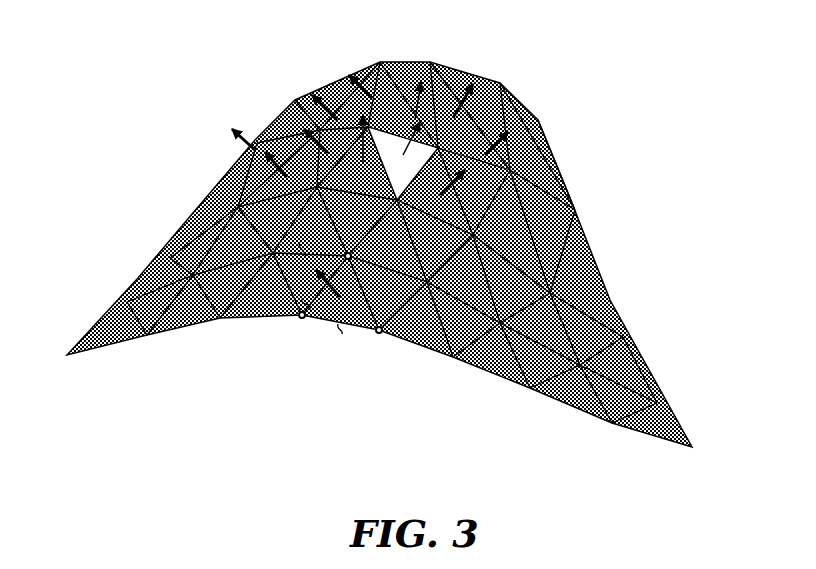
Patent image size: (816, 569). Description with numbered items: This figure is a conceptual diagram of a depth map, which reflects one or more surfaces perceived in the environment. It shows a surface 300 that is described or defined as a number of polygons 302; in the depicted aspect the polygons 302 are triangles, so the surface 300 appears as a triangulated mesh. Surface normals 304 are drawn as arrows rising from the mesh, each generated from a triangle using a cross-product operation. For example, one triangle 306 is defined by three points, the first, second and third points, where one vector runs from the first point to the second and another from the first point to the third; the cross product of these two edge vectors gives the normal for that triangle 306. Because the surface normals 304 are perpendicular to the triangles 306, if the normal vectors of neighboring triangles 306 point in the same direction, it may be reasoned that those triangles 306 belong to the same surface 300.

The surface 300 is at (379, 238).
The polygons 302 is at (575, 222).
The surface normals 304 is at (273, 112).
The triangle 306 is at (378, 308).